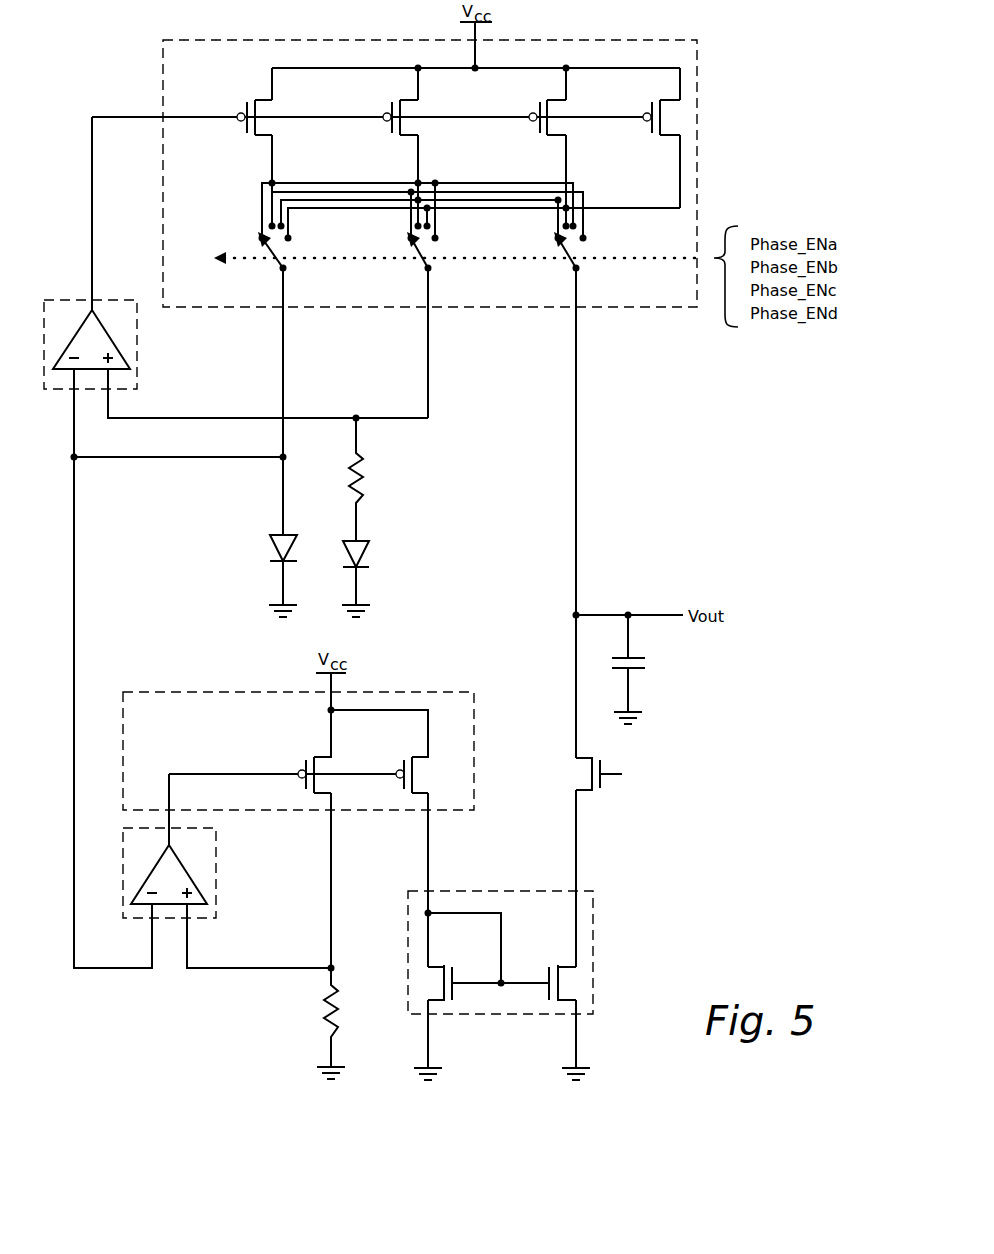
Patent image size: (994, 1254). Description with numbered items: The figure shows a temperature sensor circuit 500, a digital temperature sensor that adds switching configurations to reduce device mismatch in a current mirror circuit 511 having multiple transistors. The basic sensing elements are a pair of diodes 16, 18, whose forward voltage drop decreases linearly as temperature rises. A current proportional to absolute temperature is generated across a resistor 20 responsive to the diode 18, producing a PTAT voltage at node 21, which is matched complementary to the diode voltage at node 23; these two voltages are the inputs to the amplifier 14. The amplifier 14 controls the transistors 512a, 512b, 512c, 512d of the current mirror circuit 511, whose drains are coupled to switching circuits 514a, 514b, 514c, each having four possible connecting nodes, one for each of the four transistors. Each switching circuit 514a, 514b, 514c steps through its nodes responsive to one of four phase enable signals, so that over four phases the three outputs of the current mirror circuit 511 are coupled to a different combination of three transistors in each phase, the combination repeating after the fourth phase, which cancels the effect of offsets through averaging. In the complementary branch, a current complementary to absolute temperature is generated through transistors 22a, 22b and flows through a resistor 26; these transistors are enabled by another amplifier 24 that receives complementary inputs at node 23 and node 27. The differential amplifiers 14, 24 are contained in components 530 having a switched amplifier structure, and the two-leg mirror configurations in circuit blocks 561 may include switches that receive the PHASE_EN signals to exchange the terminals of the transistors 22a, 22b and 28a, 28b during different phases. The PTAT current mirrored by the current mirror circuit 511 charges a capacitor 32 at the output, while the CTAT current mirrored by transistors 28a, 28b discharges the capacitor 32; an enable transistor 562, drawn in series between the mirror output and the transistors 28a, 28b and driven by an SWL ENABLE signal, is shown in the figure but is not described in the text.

The current mirror circuit 511 is at (677, 39).
The transistor 512a is at (242, 125).
The transistor 512b is at (387, 125).
The transistor 512c is at (533, 125).
The transistor 512d is at (648, 125).
The switching circuit 514a is at (285, 262).
The switching circuit 514b is at (430, 262).
The switching circuit 514c is at (578, 262).
The amplifier 14 is at (104, 331).
The components 530 is at (138, 362).
The node 23 is at (72, 459).
The node 21 is at (352, 410).
The resistor 20 is at (363, 470).
The diode 16 is at (270, 548).
The diode 18 is at (369, 548).
The circuit block 561 is at (445, 692).
The transistor 22a is at (305, 789).
The transistor 22b is at (403, 789).
The amplifier 24 is at (150, 878).
The node 27 is at (334, 967).
The resistor 26 is at (322, 1010).
The transistor 28a is at (456, 1002).
The transistor 28b is at (548, 1002).
The capacitor 32 is at (637, 658).
The enable transistor 562 is at (584, 796).
The temperature sensor circuit 500 is at (176, 1055).